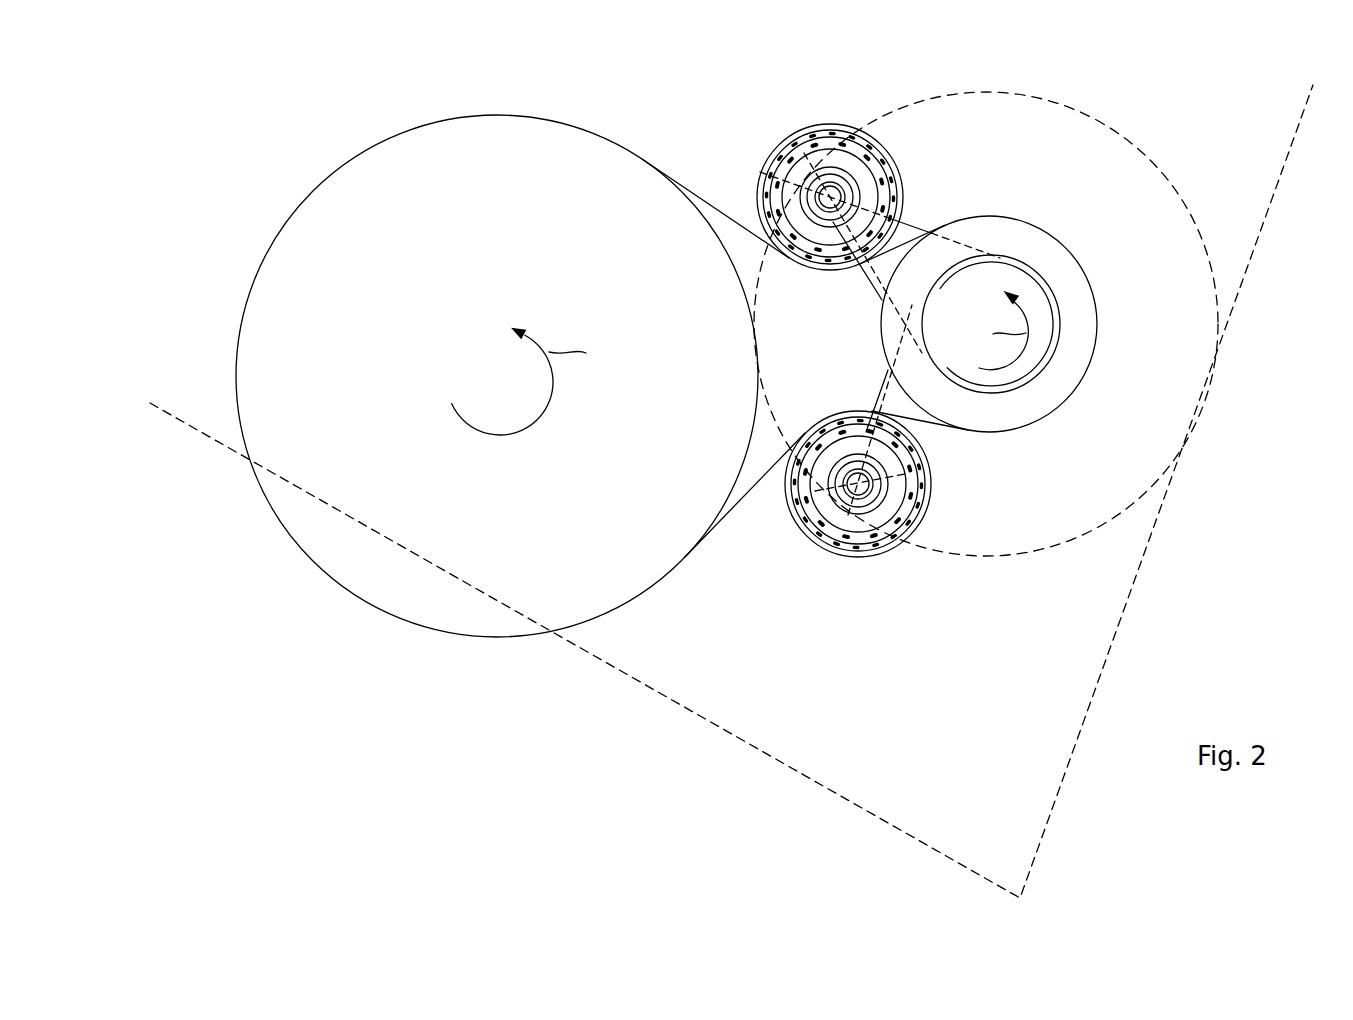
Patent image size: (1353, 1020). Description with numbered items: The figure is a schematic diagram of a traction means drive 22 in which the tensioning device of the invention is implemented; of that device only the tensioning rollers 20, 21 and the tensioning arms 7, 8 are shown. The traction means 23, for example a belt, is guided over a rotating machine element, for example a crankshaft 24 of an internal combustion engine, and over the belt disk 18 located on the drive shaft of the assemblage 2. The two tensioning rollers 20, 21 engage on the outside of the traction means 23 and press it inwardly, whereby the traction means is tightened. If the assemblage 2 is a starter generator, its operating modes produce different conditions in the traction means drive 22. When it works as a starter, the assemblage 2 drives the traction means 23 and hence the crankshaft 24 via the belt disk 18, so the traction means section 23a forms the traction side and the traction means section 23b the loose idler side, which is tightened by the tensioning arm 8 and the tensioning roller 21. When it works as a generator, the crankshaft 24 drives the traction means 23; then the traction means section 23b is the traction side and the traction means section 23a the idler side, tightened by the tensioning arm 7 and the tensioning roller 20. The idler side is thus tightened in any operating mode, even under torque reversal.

The assemblage 2 is at (1105, 140).
The tensioning arm 7 is at (932, 437).
The tensioning arm 8 is at (907, 228).
The belt disk 18 is at (1070, 272).
The tensioning roller 20 is at (855, 560).
The tensioning roller 21 is at (831, 124).
The traction means drive 22 is at (722, 117).
The traction means 23 is at (805, 350).
The traction means section 23a is at (758, 490).
The traction means section 23b is at (738, 222).
The crankshaft 24 is at (460, 140).